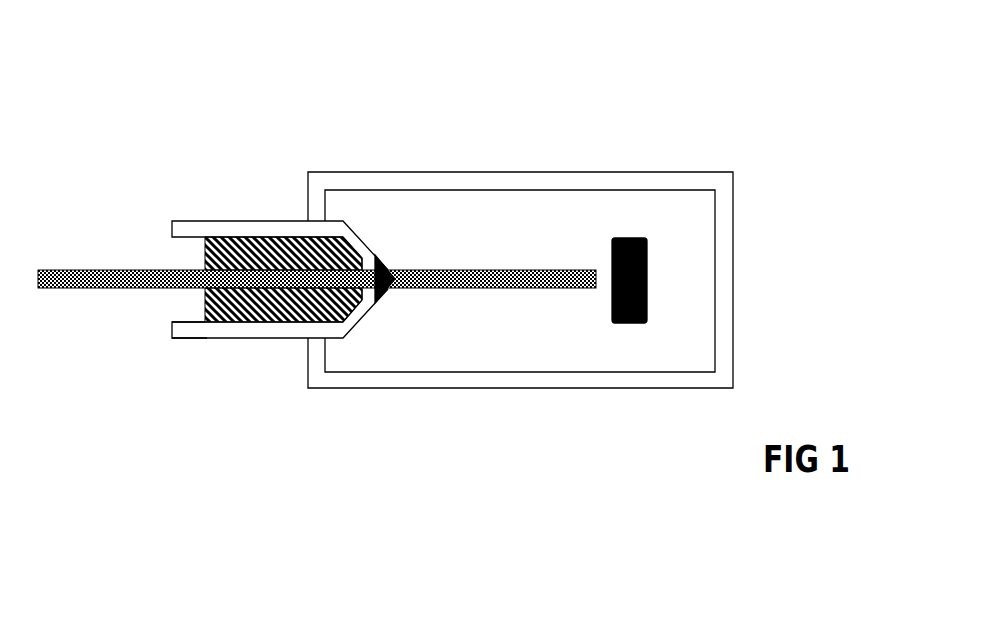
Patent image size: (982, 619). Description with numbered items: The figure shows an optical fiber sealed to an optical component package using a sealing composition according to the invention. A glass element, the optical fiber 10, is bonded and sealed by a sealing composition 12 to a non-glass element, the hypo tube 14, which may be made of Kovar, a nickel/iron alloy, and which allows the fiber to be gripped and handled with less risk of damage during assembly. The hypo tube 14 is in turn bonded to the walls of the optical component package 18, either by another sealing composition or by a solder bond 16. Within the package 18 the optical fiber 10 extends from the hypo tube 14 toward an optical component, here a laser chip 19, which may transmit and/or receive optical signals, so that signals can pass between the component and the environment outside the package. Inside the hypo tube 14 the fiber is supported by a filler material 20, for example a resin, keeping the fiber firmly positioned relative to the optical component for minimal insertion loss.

The optical fiber 10 is at (117, 255).
The sealing composition 12 is at (393, 312).
The hypo tube 14 is at (214, 351).
The solder bond 16 is at (300, 208).
The optical component package 18 is at (486, 161).
The laser chip 19 is at (636, 226).
The filler material 20 is at (268, 315).